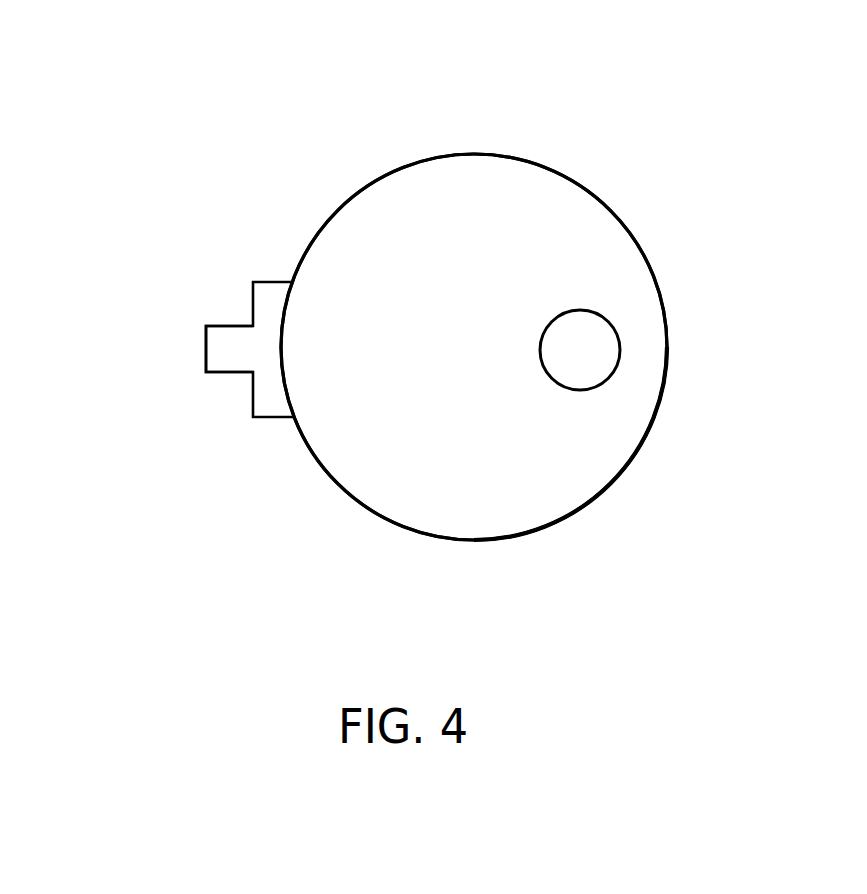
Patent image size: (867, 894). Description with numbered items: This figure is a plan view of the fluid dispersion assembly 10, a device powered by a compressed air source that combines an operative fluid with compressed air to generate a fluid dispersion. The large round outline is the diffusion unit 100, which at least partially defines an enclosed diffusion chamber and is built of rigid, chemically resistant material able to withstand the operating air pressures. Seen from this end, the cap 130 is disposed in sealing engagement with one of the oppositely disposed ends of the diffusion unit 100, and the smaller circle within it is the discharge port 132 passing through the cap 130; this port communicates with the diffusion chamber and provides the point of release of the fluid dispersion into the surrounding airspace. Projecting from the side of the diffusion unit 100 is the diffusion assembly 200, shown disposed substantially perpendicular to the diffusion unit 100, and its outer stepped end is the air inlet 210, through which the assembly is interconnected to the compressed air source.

The fluid dispersion assembly 10 is at (235, 147).
The diffusion unit 100 is at (568, 532).
The cap 130 is at (547, 198).
The discharge port 132 is at (583, 350).
The diffusion assembly 200 is at (240, 422).
The air inlet 210 is at (183, 360).